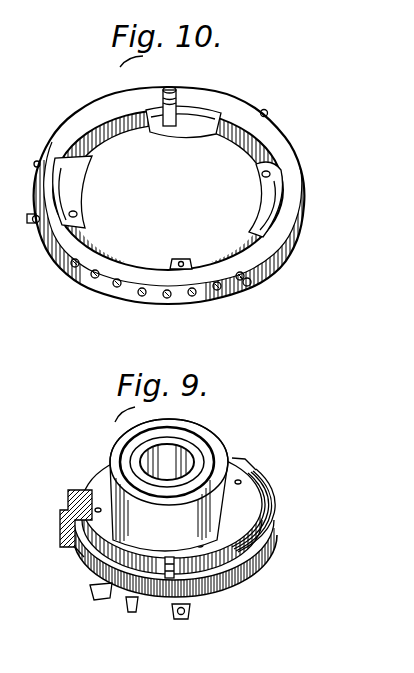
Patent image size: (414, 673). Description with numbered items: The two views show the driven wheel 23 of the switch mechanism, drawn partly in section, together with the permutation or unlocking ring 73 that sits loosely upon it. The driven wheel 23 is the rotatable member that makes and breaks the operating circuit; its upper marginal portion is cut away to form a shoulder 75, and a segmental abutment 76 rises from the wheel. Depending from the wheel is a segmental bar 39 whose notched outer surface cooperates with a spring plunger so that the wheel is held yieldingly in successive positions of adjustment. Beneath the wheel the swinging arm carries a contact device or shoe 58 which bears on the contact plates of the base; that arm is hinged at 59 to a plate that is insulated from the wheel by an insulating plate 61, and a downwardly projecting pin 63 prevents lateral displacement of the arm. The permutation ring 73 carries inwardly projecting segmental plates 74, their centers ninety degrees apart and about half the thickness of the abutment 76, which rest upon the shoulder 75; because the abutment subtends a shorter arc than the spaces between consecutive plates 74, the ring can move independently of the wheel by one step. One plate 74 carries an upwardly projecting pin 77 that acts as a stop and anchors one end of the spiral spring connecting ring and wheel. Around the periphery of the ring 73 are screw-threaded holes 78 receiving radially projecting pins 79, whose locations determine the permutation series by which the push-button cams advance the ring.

In FIG. 10, the permutation ring 73 is at (63, 132).
In FIG. 10, the segmental plates 74 is at (262, 198).
In FIG. 10, the pin 77 is at (180, 110).
In FIG. 10, the screw-threaded holes 78 is at (143, 297).
In FIG. 10, the pins 79 is at (33, 223).
In FIG. 9, the driven wheel 23 is at (225, 442).
In FIG. 9, the segmental abutment 76 is at (252, 472).
In FIG. 9, the shoulder 75 is at (269, 524).
In FIG. 9, the insulating plate 61 is at (227, 592).
In FIG. 9, the contact device or shoe 58 is at (106, 598).
In FIG. 9, the hinge 59 is at (189, 612).
In FIG. 9, the pin 63 is at (132, 608).
In FIG. 9, the segmental bar 39 is at (68, 547).